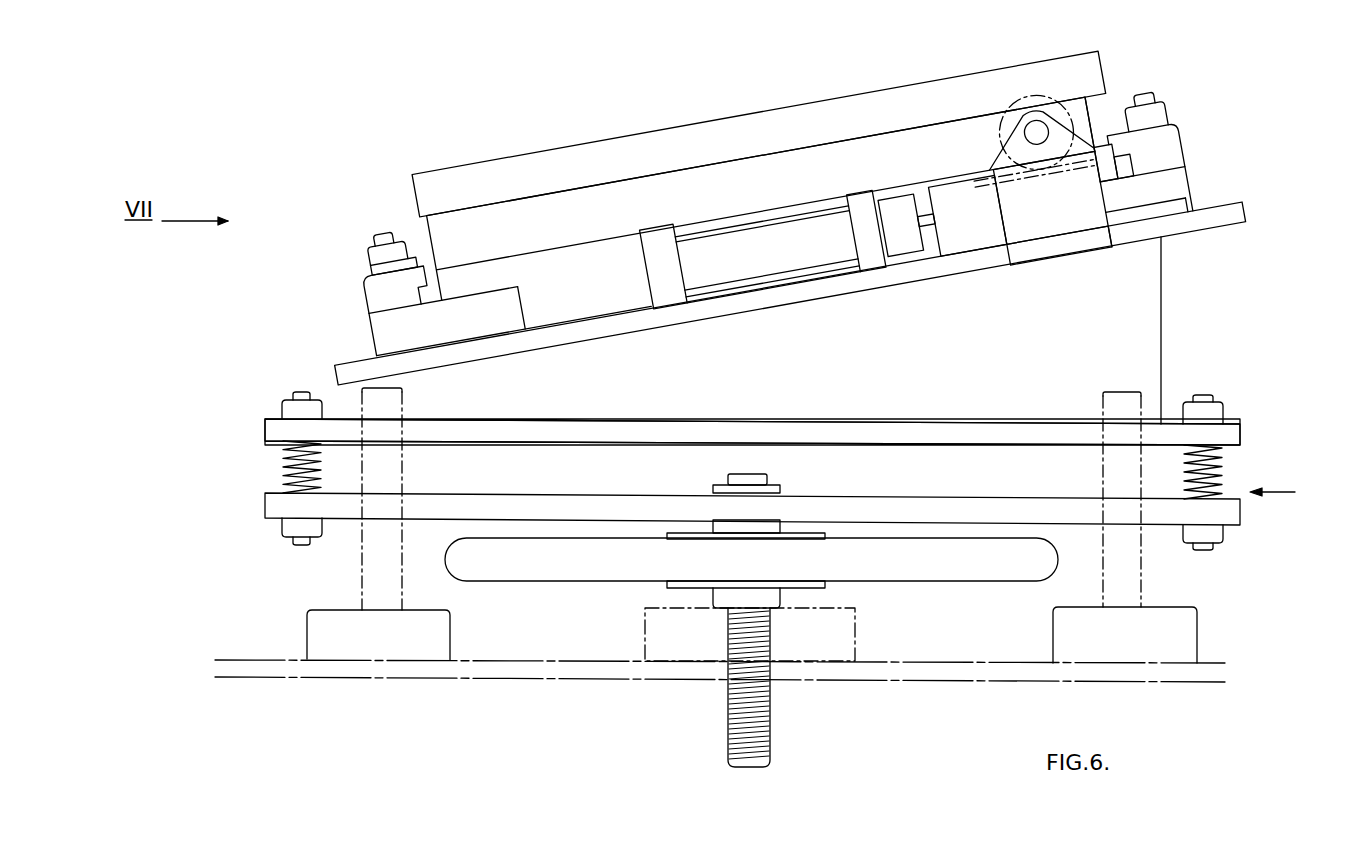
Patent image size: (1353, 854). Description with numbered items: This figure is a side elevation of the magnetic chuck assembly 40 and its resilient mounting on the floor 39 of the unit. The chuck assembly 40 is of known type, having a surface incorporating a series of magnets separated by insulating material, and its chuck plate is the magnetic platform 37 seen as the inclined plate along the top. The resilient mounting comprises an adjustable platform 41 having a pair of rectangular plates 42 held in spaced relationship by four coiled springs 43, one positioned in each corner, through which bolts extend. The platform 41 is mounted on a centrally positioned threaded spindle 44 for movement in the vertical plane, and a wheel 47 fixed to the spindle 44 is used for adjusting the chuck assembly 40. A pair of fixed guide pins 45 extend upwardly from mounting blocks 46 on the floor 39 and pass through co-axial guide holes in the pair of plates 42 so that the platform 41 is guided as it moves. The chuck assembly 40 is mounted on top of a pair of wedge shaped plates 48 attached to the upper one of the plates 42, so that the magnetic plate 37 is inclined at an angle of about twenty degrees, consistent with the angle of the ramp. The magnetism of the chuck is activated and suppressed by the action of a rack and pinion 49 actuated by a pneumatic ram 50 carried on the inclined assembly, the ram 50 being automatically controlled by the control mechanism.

The platform 37 is at (733, 130).
The floor 39 is at (953, 680).
The magnetic chuck assembly 40 is at (1122, 95).
The adjustable platform 41 is at (1287, 487).
The rectangular plates 42 is at (893, 427).
The coiled springs 43 is at (282, 470).
The threaded spindle 44 is at (728, 716).
The guide pins 45 is at (398, 396).
The mounting blocks 46 is at (440, 636).
The wheel 47 is at (588, 575).
The wedge shaped plates 48 is at (1163, 287).
The rack and pinion 49 is at (980, 148).
The pneumatic ram 50 is at (802, 262).